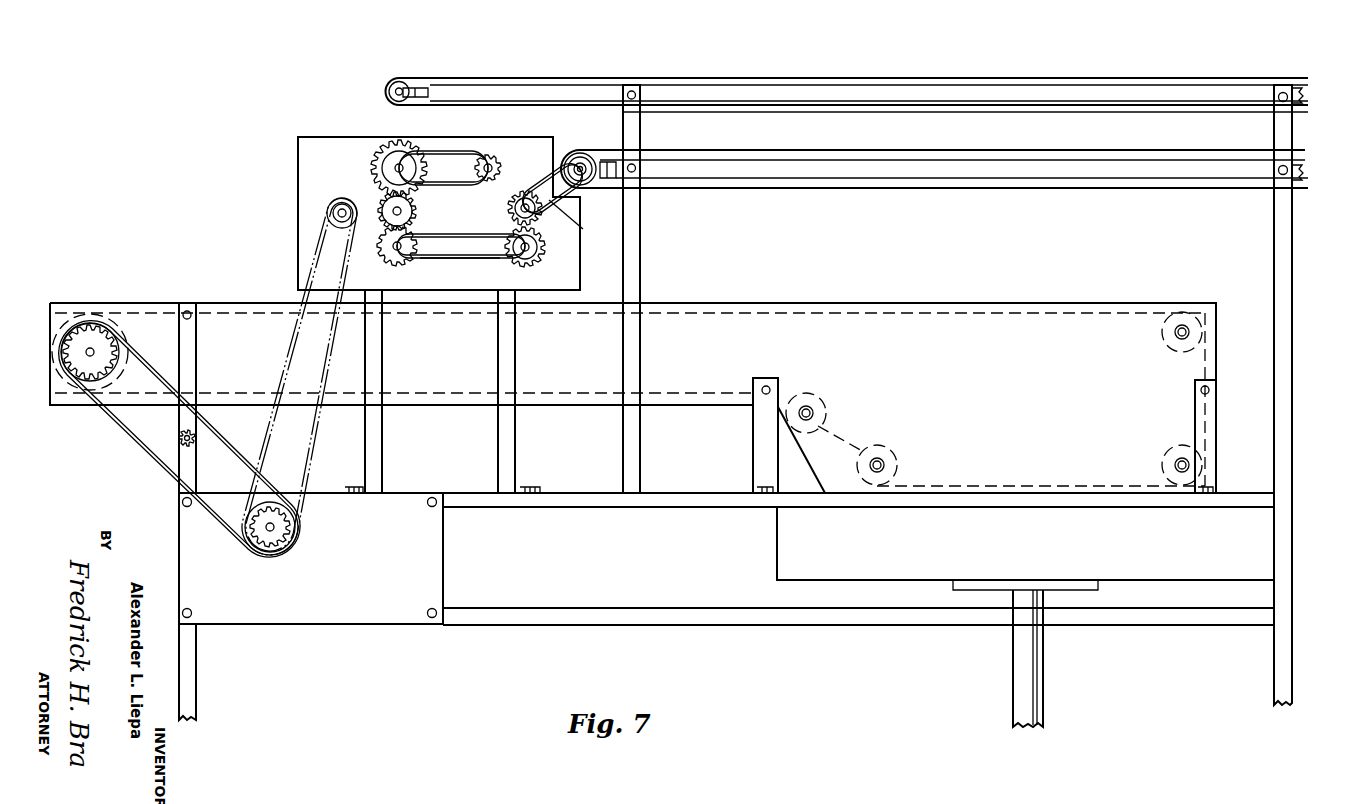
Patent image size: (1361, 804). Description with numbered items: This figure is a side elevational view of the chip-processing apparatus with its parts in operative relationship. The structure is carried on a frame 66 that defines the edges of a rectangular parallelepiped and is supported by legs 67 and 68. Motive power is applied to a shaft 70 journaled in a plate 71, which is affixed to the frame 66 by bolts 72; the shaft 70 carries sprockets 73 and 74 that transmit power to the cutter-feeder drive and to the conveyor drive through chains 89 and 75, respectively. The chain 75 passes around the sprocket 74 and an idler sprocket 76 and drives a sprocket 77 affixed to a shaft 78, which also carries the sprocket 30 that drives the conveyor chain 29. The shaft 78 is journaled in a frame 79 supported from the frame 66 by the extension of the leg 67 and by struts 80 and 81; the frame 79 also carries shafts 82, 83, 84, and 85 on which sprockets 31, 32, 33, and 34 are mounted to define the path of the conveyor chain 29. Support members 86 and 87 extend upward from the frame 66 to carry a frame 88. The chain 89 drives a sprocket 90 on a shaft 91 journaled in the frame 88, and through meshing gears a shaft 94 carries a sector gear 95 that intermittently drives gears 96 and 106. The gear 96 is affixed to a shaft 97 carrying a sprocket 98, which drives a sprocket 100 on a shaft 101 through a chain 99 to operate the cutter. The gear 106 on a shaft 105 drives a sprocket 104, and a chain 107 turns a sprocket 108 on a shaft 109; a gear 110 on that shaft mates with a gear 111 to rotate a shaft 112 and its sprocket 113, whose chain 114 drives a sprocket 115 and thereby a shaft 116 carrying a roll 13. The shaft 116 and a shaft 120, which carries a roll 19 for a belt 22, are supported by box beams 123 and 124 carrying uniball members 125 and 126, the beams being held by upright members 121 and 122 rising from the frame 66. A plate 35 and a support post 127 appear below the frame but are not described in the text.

The roll 13 is at (584, 150).
The roll 19 is at (389, 90).
The belt 22 is at (468, 78).
The conveyor chain 29 is at (683, 304).
The sprocket 30 is at (72, 302).
The sprocket 31 is at (1163, 340).
The sprocket 32 is at (1163, 456).
The sprocket 33 is at (882, 448).
The sprocket 34 is at (818, 396).
The housing plate 35 is at (1025, 543).
The frame 66 is at (578, 500).
The leg 67 is at (196, 668).
The leg 68 is at (1288, 664).
The shaft 70 is at (284, 542).
The plate 71 is at (311, 558).
The bolt 72 is at (191, 507).
The sprocket 73 is at (293, 514).
The sprocket 74 is at (265, 545).
The chain 75 is at (163, 418).
The idler sprocket 76 is at (186, 448).
The sprocket 77 is at (94, 340).
The shaft 78 is at (88, 360).
The frame 79 is at (627, 394).
The strut 80 is at (765, 471).
The strut 81 is at (1216, 430).
The shaft 82 is at (1182, 325).
The shaft 83 is at (1190, 465).
The shaft 84 is at (888, 465).
The shaft 85 is at (816, 414).
The support member 86 is at (374, 468).
The support member 87 is at (508, 470).
The frame 88 is at (439, 213).
The chain 89 is at (326, 322).
The sprocket 90 is at (328, 220).
The shaft 91 is at (333, 206).
The shaft 94 is at (402, 212).
The sector gear 95 is at (383, 206).
The gear 96 is at (443, 168).
The shaft 97 is at (404, 160).
The sprocket 98 is at (392, 148).
The chain 99 is at (434, 151).
The sprocket 100 is at (494, 178).
The shaft 101 is at (490, 168).
The sprocket 104 is at (388, 262).
The shaft 105 is at (399, 258).
The gear 106 is at (461, 245).
The chain 107 is at (456, 260).
The sprocket 108 is at (528, 262).
The shaft 109 is at (565, 243).
The gear 110 is at (461, 248).
The gear 111 is at (583, 229).
The shaft 112 is at (510, 205).
The sprocket 113 is at (514, 214).
The chain 114 is at (575, 196).
The sprocket 115 is at (562, 152).
The shaft 116 is at (580, 158).
The shaft 120 is at (399, 82).
The upright member 121 is at (634, 266).
The upright member 122 is at (1286, 270).
The box beam 123 is at (718, 182).
The box beam 124 is at (738, 100).
The uniball member 125 is at (602, 148).
The uniball member 126 is at (416, 90).
The support post 127 is at (1030, 668).